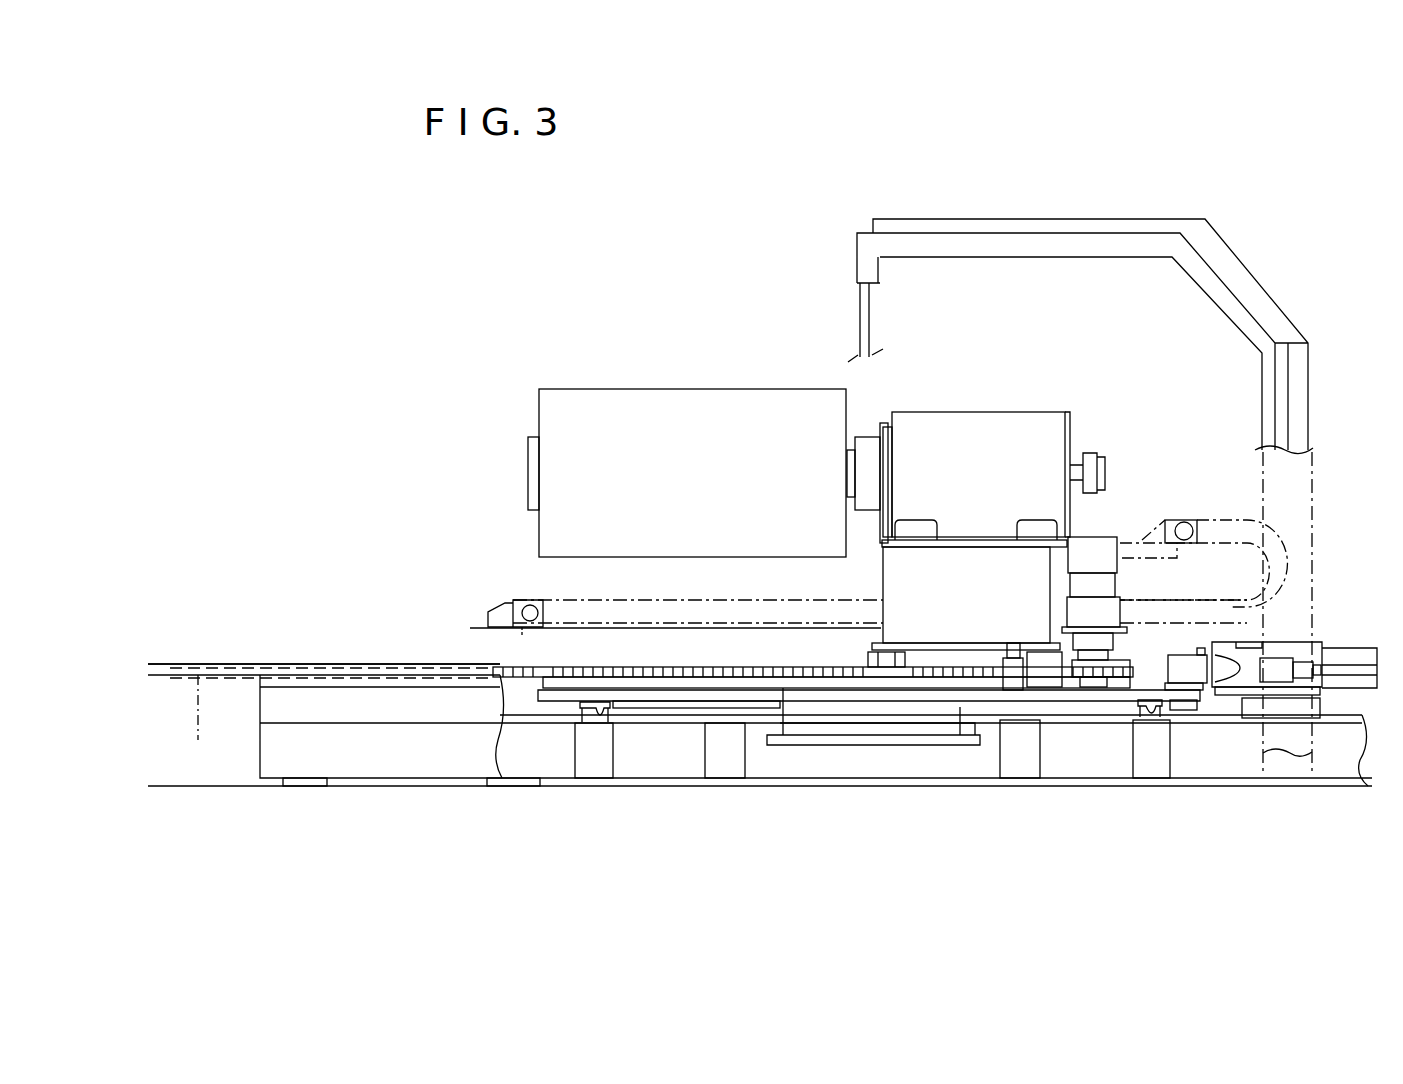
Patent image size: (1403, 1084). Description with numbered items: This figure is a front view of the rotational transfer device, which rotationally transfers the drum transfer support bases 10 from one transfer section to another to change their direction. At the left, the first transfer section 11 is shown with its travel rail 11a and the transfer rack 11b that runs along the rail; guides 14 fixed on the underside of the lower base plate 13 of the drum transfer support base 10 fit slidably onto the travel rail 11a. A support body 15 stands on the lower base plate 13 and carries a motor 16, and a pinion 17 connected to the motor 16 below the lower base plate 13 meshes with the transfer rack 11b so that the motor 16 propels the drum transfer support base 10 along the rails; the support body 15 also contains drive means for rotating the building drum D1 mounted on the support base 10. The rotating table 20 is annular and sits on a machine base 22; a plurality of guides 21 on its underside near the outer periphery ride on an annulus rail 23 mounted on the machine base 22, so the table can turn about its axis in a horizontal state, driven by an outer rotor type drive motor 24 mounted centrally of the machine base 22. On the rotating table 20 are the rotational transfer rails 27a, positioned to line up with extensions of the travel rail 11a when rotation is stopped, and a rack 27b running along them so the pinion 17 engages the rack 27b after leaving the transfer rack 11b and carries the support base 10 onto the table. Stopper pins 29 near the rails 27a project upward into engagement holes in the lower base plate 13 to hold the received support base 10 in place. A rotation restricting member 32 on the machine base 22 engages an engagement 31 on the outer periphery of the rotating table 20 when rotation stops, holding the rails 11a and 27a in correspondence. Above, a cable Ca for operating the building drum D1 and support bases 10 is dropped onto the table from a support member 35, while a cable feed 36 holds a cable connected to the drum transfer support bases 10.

The drum transfer support base 10 is at (1025, 410).
The first transfer section 11 is at (342, 646).
The travel rail 11a is at (265, 662).
The transfer rack 11b is at (200, 700).
The lower base plate 13 is at (957, 650).
The guide 14 is at (885, 660).
The support body 15 is at (940, 593).
The motor 16 is at (1103, 560).
The pinion 17 is at (1115, 664).
The rotating table 20 is at (680, 695).
The guide 21 is at (578, 707).
The machine base 22 is at (600, 763).
The annulus rail 23 is at (1188, 672).
The drive motor 24 is at (820, 727).
The rotational transfer rail 27a is at (757, 666).
The rack 27b is at (650, 666).
The stopper pin 29 is at (1012, 660).
The engagement 31 is at (1193, 690).
The rotation restricting member 32 is at (1240, 657).
The support member 35 is at (1095, 240).
The cable feed 36 is at (1228, 524).
The building drum D1 is at (600, 415).
The cable Ca is at (862, 318).